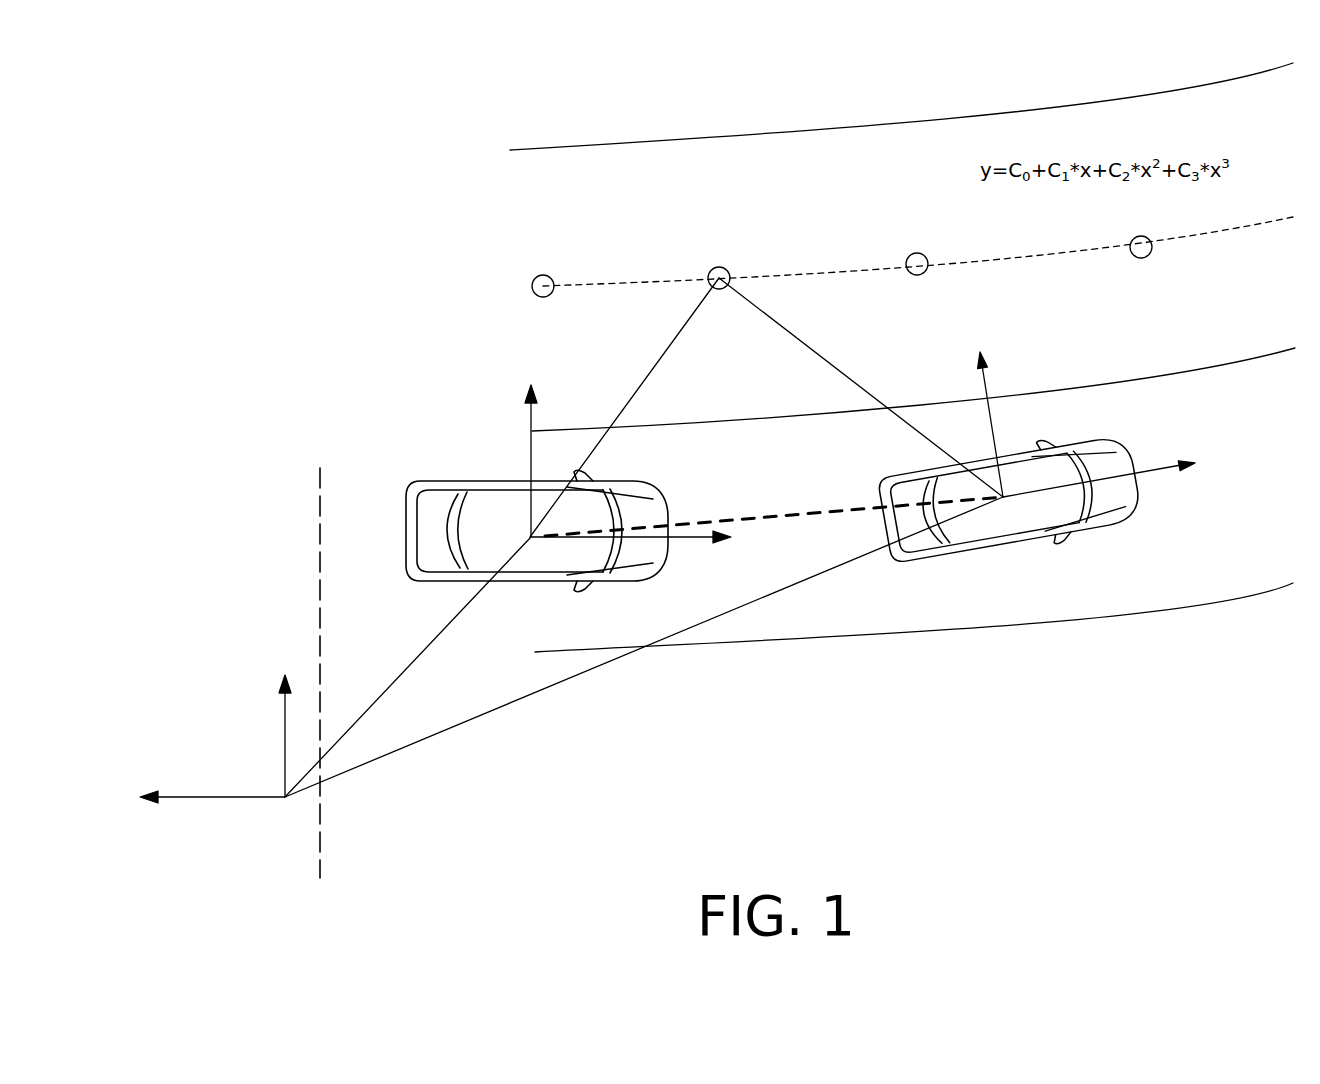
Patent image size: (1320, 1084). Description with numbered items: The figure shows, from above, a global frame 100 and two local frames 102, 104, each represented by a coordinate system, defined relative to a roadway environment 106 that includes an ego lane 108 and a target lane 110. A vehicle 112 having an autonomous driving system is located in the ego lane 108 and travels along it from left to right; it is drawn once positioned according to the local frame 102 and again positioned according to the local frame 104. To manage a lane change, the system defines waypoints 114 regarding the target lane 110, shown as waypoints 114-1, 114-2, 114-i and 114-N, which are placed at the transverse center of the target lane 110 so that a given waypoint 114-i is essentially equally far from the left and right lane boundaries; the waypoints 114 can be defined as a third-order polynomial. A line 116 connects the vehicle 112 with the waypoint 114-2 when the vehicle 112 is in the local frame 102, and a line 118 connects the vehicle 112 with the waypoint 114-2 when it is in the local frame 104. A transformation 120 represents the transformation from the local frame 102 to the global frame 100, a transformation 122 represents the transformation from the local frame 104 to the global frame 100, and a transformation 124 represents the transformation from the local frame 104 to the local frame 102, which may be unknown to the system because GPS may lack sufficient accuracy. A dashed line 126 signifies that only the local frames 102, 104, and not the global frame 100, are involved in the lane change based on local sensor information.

The global frame 100 is at (284, 740).
The local frame 102 is at (538, 403).
The local frame 104 is at (984, 392).
The environment 106 is at (845, 240).
The ego lane 108 is at (913, 500).
The target lane 110 is at (901, 106).
The vehicle 112 is at (407, 520).
The waypoints 114 is at (795, 233).
The waypoint 114-1 is at (531, 286).
The waypoint 114-2 is at (708, 275).
The waypoint 114-i is at (905, 262).
The waypoint 114-N is at (1129, 247).
The line 116 is at (669, 357).
The line 118 is at (815, 367).
The transformation 120 is at (412, 660).
The transformation 122 is at (482, 708).
The transformation 124 is at (712, 514).
The dashed line 126 is at (319, 548).